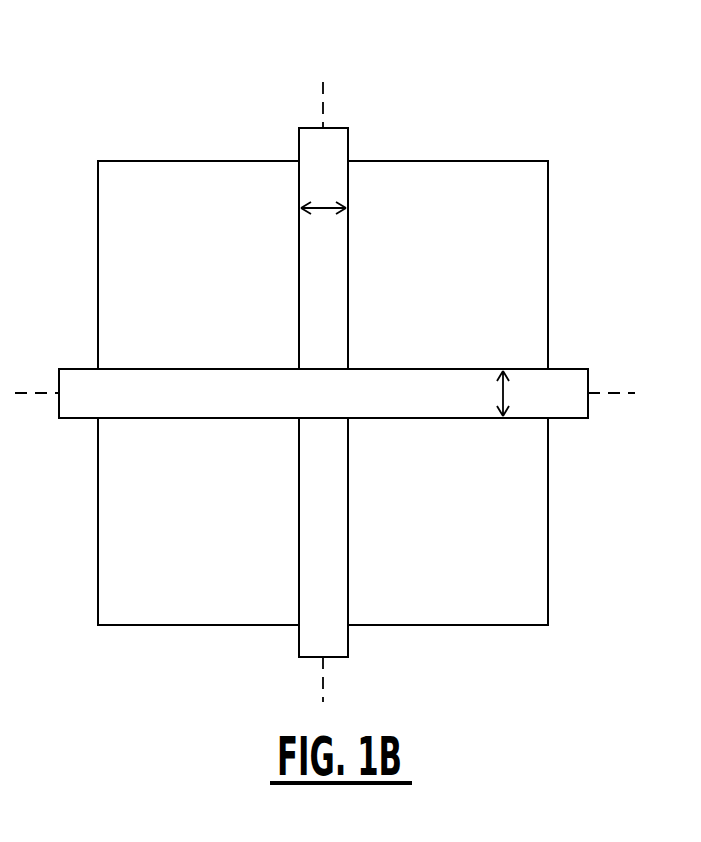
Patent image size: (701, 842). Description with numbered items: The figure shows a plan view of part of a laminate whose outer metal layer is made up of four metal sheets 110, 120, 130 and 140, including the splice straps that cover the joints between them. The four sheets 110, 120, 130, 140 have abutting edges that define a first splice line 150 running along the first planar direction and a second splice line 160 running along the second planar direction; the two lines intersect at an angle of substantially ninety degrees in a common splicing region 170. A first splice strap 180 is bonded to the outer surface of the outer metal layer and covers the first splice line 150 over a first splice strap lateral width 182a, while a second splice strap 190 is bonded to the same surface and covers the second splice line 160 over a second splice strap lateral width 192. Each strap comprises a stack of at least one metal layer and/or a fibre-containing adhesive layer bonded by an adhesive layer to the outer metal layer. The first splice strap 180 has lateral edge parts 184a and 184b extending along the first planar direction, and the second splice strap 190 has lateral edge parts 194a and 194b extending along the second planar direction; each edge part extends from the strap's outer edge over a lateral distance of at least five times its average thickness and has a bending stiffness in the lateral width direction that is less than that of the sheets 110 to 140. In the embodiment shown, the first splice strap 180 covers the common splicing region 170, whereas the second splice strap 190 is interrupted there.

The metal sheet 110 is at (163, 170).
The metal sheet 120 is at (508, 178).
The metal sheet 130 is at (143, 612).
The metal sheet 140 is at (506, 608).
The first splice line 150 is at (632, 398).
The second splice line 160 is at (323, 94).
The common splicing region 170 is at (300, 370).
The first splice strap 180 is at (570, 378).
The first splice strap lateral width 182a is at (500, 392).
The lateral edge part 184a is at (402, 348).
The lateral edge part 184b is at (392, 445).
The second splice strap 190 is at (337, 145).
The second splice strap lateral width 192 is at (322, 206).
The lateral edge part 194a is at (378, 569).
The lateral edge part 194b is at (260, 575).